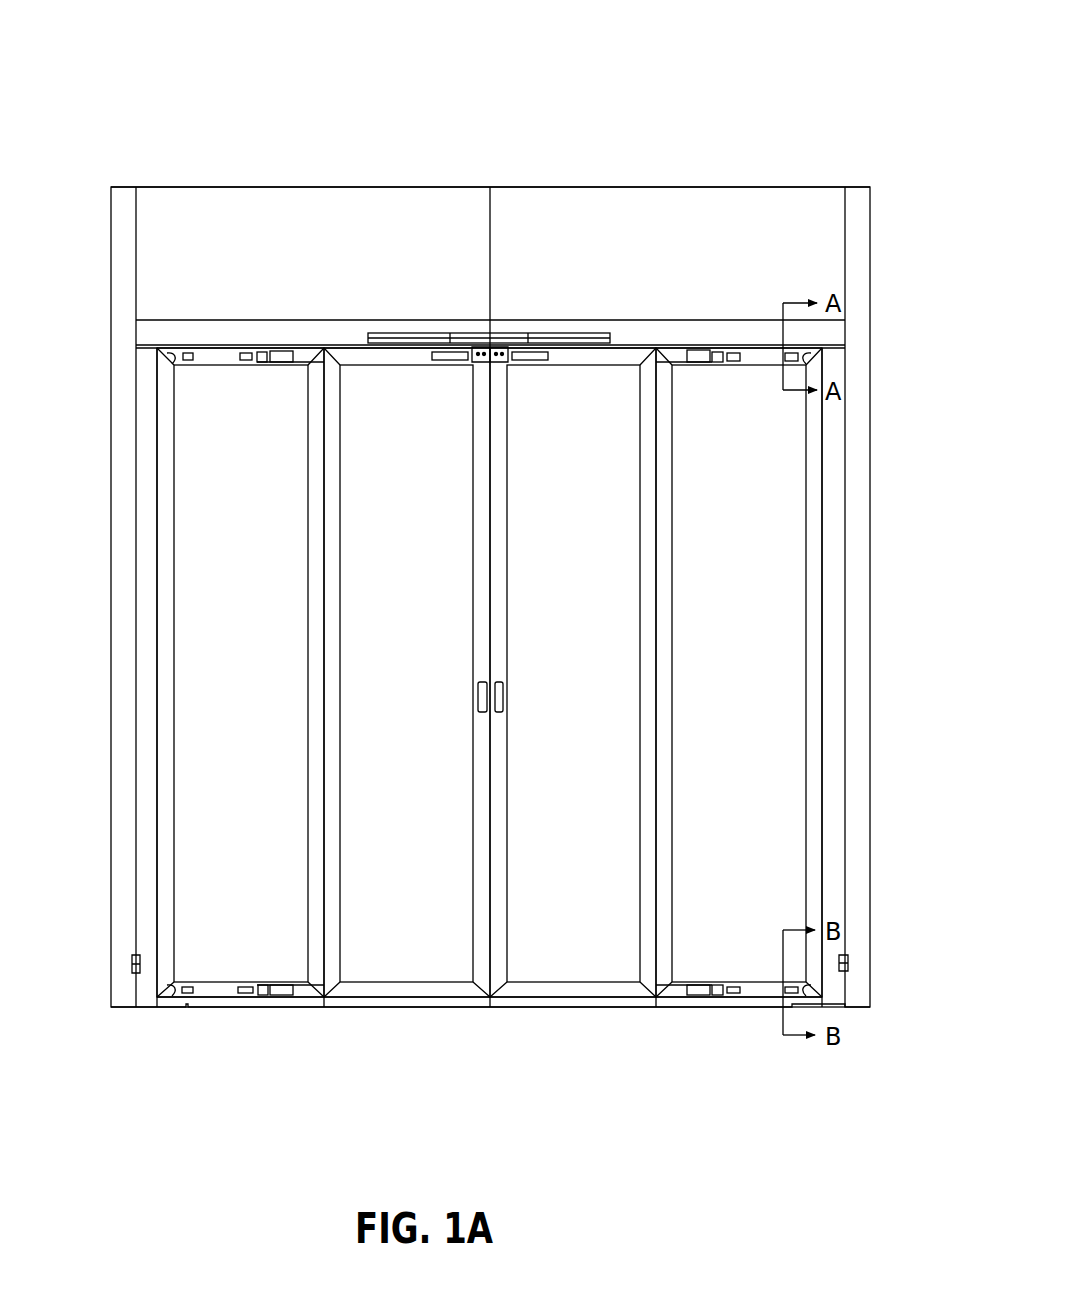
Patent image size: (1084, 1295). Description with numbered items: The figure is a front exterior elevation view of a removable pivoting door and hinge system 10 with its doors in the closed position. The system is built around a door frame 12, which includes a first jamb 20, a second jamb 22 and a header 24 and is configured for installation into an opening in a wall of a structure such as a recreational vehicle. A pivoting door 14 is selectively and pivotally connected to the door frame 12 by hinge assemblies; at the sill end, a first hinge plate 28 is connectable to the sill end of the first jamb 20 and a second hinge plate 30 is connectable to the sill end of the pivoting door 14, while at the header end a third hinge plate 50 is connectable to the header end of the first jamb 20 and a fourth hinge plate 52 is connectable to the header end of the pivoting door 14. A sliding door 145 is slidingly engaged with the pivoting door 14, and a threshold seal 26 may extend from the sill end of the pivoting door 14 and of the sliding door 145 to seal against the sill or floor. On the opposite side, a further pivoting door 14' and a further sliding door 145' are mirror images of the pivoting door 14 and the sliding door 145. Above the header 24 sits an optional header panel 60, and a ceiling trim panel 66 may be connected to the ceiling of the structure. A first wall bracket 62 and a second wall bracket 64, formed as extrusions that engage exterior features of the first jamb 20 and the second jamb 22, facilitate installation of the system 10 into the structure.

The removable pivoting door and hinge system 10 is at (307, 130).
The door frame 12 is at (505, 606).
The pivoting door 14 is at (187, 627).
The further pivoting door 14' is at (739, 672).
The sliding door 145 is at (407, 672).
The further sliding door 145' is at (573, 672).
The first jamb 20 is at (152, 898).
The second jamb 22 is at (837, 853).
The header 24 is at (703, 335).
The threshold seal 26 is at (300, 1005).
The first hinge plate 28 is at (162, 1010).
The second hinge plate 30 is at (227, 997).
The third hinge plate 50 is at (178, 348).
The fourth hinge plate 52 is at (172, 357).
The header panel 60 is at (593, 228).
The first wall bracket 62 is at (122, 777).
The second wall bracket 64 is at (858, 935).
The ceiling trim panel 66 is at (770, 187).